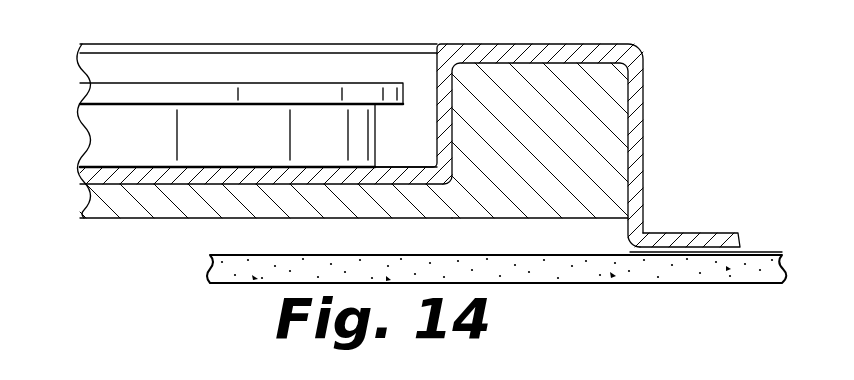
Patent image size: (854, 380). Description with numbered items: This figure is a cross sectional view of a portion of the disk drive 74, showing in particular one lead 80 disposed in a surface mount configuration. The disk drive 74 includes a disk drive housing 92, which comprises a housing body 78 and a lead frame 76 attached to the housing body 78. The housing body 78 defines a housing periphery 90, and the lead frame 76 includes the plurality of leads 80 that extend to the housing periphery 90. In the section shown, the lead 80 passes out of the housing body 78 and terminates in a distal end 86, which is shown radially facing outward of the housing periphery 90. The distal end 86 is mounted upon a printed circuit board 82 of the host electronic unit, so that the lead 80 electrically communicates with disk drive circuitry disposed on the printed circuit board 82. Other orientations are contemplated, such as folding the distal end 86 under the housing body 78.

The disk drive 74 is at (400, 44).
The lead frame 76 is at (205, 170).
The housing body 78 is at (152, 218).
The lead 80 is at (645, 134).
The printed circuit board 82 is at (725, 283).
The distal end 86 is at (697, 233).
The housing periphery 90 is at (622, 138).
The disk drive housing 92 is at (100, 230).